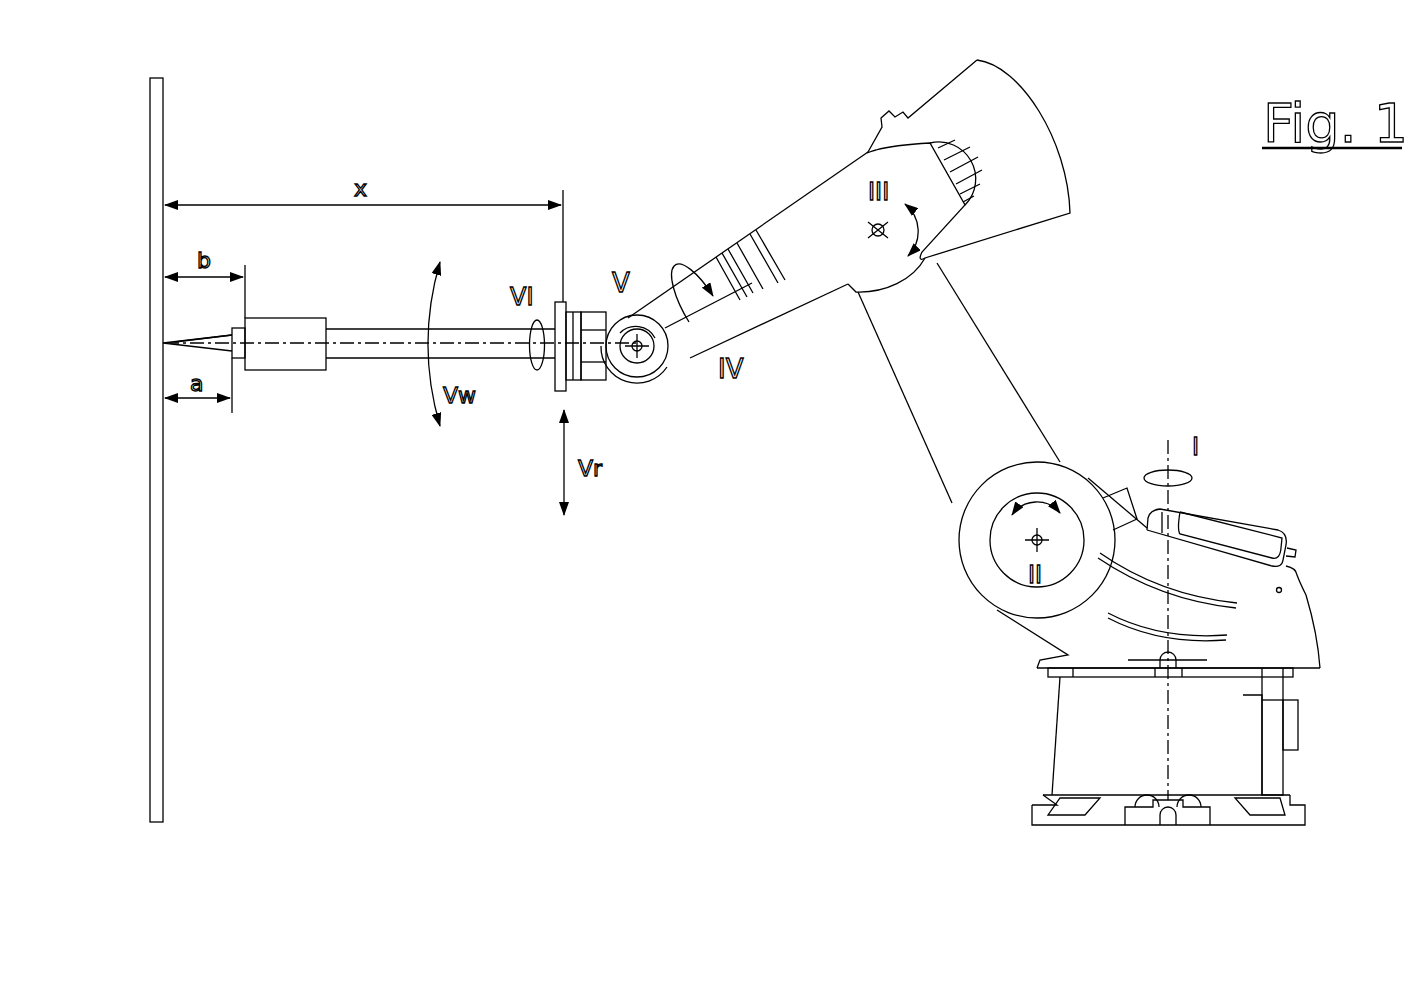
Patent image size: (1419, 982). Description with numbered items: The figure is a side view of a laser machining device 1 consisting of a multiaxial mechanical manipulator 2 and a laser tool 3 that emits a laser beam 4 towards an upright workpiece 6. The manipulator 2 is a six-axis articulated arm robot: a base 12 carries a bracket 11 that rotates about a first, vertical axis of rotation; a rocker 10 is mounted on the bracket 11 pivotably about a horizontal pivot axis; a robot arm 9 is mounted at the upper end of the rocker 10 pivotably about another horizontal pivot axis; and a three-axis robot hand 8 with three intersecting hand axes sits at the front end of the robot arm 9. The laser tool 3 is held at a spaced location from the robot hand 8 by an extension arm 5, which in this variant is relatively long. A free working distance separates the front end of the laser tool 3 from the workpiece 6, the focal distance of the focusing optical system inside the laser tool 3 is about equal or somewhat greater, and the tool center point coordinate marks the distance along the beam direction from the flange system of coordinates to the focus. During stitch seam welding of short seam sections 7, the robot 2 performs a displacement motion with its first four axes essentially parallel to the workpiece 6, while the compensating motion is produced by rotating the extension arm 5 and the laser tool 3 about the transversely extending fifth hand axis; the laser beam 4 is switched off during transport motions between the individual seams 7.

The laser machining device 1 is at (645, 580).
The multiaxial mechanical manipulator 2 is at (912, 418).
The laser tool 3 is at (300, 357).
The laser beam 4 is at (212, 337).
The extension arm 5 is at (390, 352).
The workpiece 6 is at (167, 588).
The seam section 7 is at (162, 334).
The robot hand 8 is at (663, 380).
The robot arm 9 is at (796, 233).
The rocker 10 is at (950, 322).
The bracket 11 is at (1297, 622).
The base 12 is at (1110, 740).